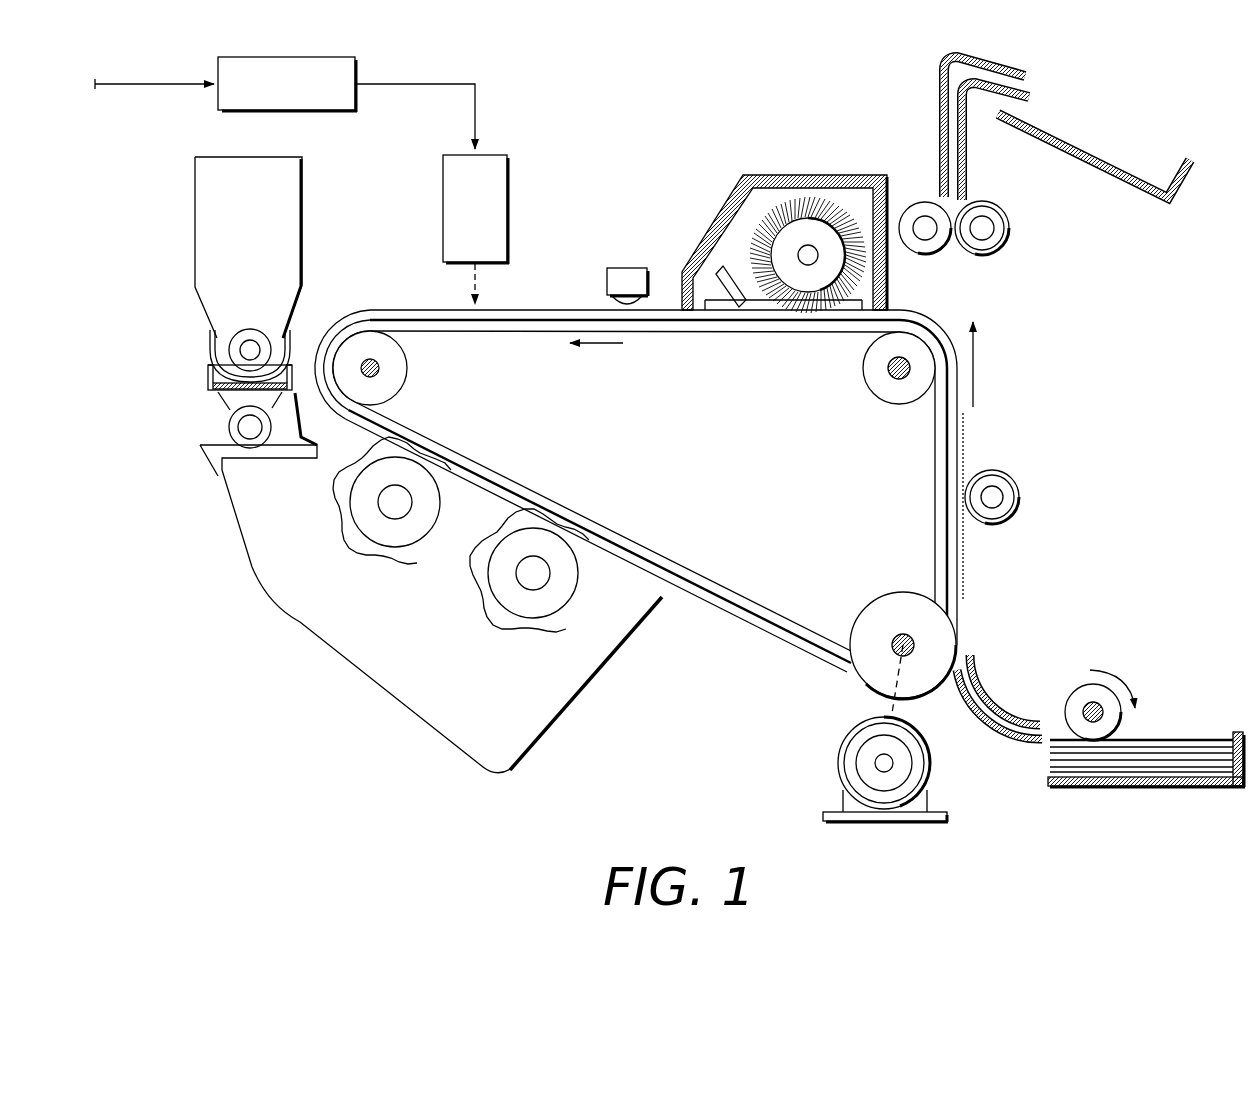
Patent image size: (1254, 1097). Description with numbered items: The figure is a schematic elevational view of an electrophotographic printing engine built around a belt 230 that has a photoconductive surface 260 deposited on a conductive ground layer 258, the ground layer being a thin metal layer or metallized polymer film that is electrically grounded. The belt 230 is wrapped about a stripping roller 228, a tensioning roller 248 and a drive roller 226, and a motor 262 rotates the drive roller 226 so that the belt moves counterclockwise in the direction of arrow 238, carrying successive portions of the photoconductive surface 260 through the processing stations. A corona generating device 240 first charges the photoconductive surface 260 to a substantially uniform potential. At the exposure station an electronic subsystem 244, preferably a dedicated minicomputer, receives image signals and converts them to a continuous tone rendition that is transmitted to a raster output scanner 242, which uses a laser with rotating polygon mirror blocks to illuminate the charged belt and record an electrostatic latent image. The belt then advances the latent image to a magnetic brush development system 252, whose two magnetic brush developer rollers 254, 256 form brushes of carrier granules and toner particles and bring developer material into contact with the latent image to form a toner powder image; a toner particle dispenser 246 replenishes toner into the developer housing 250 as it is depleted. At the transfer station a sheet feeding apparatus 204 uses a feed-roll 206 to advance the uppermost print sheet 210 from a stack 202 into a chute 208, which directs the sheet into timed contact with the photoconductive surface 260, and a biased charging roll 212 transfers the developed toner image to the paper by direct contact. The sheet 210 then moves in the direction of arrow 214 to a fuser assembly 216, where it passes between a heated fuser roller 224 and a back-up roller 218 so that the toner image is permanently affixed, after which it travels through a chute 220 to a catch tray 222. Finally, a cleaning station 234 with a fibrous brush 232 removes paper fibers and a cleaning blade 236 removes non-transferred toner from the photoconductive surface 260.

The stack 202 is at (1157, 780).
The sheet feeding apparatus 204 is at (1169, 727).
The feed-roll 206 is at (1102, 692).
The chute 208 is at (1003, 712).
The print sheet 210 is at (967, 563).
The biased charging roll 212 is at (1019, 488).
The arrow 214 is at (977, 372).
The fuser assembly 216 is at (994, 255).
The back-up roller 218 is at (1009, 231).
The chute 220 is at (968, 143).
The catch tray 222 is at (1127, 172).
The heated fuser roller 224 is at (928, 256).
The drive roller 226 is at (862, 608).
The stripping roller 228 is at (890, 406).
The belt 230 is at (830, 347).
The fibrous brush 232 is at (817, 205).
The cleaning station 234 is at (784, 244).
The cleaning blade 236 is at (735, 302).
The arrow 238 is at (600, 347).
The corona generating device 240 is at (622, 266).
The raster output scanner 242 is at (510, 186).
The electronic subsystem 244 is at (335, 55).
The toner particle dispenser 246 is at (303, 230).
The tensioning roller 248 is at (407, 395).
The developer housing 250 is at (237, 528).
The magnetic brush development system 252 is at (442, 605).
The magnetic brush developer roller 254 is at (383, 545).
The magnetic brush developer roller 256 is at (520, 617).
The conductive ground layer 258 is at (663, 551).
The photoconductive surface 260 is at (753, 627).
The motor 262 is at (839, 750).